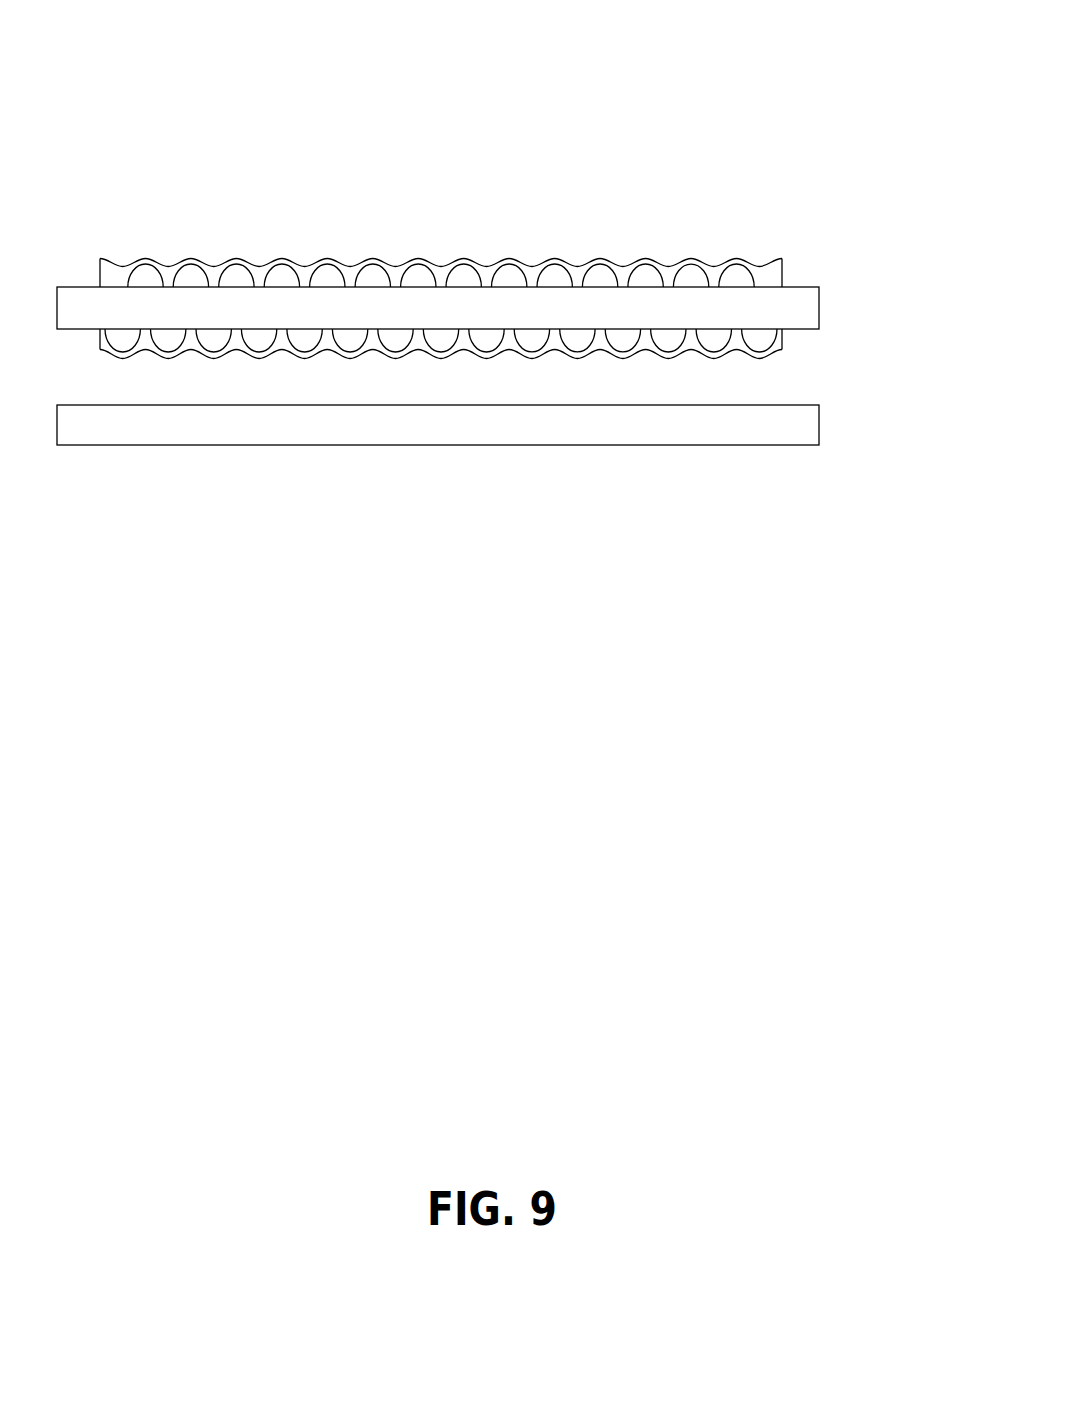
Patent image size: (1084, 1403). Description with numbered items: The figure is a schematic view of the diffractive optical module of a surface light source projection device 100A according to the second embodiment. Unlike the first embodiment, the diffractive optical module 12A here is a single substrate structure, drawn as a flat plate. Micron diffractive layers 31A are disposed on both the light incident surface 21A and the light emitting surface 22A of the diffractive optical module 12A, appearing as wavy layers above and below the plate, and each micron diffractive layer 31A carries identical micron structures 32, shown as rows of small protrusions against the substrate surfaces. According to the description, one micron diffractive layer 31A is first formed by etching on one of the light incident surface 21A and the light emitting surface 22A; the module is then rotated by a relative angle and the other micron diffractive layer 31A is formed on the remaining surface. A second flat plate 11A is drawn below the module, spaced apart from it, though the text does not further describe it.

The surface light source projection device 100A is at (158, 38).
The first substrate 11A is at (820, 426).
The diffractive optical module 12A is at (820, 305).
The light incident surface 21A is at (802, 329).
The light emitting surface 22A is at (514, 228).
The micron diffractive layer 31A is at (691, 259).
The micron structure 32 is at (556, 261).